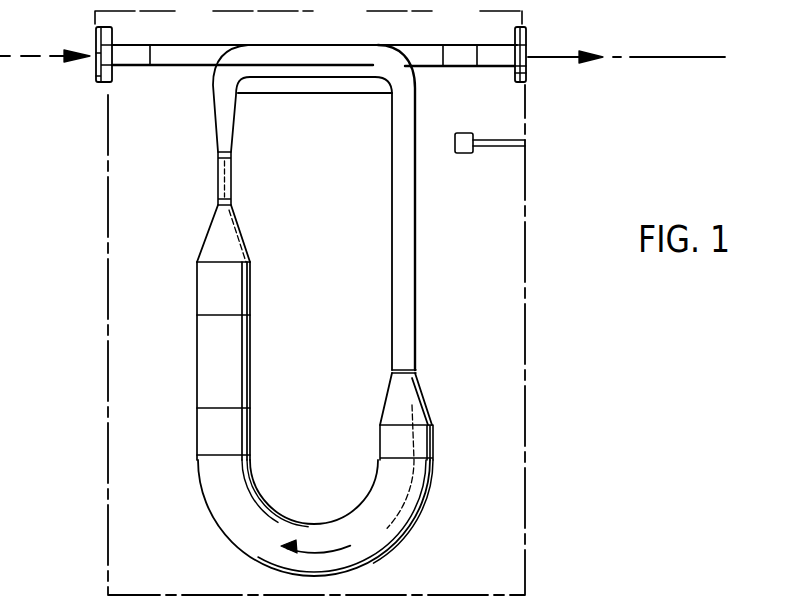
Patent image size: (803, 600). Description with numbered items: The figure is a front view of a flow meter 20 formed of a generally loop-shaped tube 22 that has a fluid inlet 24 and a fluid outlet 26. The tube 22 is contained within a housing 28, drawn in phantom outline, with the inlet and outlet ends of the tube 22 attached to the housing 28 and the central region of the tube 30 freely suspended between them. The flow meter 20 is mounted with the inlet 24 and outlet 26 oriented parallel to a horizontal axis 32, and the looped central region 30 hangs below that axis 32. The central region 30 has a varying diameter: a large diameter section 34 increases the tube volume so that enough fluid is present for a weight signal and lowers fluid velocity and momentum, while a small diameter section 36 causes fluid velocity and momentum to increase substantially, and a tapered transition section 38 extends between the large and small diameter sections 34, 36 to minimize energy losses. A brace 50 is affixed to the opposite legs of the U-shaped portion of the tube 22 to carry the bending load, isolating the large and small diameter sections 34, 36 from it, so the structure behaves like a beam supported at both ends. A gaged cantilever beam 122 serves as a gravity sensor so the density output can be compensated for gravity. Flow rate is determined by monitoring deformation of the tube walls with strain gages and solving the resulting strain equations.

The flow meter 20 is at (409, 40).
The tube 22 is at (180, 44).
The fluid inlet 24 is at (95, 33).
The fluid outlet 26 is at (541, 33).
The housing 28 is at (527, 183).
The central region of the tube 30 is at (180, 205).
The horizontal axis 32 is at (698, 60).
The large diameter section 34 is at (240, 292).
The small diameter section 36 is at (233, 165).
The tapered transition section 38 is at (247, 233).
The brace 50 is at (315, 78).
The gaged cantilever beam 122 is at (510, 137).